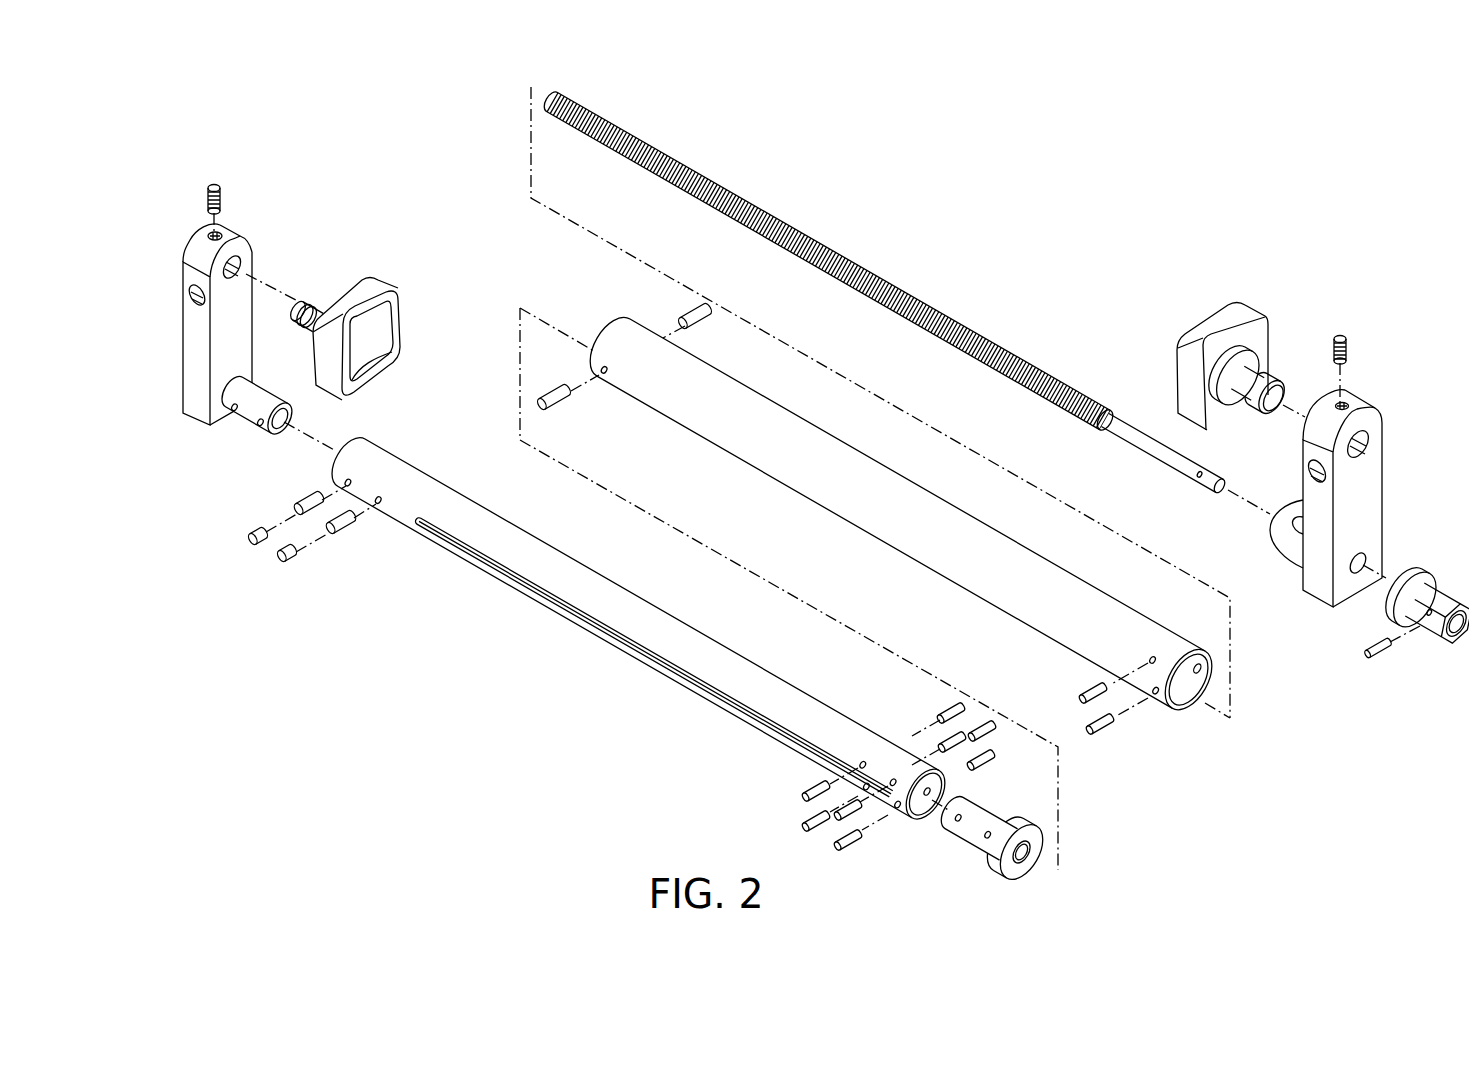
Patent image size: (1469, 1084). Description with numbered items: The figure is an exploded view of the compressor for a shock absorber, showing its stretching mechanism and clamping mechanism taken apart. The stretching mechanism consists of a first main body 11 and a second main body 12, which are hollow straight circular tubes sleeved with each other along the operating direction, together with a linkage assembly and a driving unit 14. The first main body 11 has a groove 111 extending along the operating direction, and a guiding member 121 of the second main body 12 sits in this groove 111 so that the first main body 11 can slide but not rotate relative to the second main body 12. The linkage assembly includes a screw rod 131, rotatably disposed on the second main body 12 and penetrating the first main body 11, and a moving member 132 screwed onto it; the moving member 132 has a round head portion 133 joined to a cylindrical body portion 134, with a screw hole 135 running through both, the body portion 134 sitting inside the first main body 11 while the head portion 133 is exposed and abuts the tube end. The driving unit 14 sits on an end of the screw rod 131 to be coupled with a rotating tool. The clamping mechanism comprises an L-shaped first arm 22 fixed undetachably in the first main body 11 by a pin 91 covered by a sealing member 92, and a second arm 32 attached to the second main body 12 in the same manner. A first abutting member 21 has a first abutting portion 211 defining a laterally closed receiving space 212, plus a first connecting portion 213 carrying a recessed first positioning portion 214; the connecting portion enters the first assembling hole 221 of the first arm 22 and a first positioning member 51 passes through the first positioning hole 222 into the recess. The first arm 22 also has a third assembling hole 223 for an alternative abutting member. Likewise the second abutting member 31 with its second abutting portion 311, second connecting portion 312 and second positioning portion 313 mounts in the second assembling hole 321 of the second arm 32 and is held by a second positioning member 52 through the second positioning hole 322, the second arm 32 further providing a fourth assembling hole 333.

The first main body 11 is at (638, 628).
The groove 111 is at (570, 598).
The second main body 12 is at (828, 508).
The guiding member 121 is at (692, 317).
The screw rod 131 is at (875, 272).
The moving member 132 is at (993, 838).
The head portion 133 is at (1017, 849).
The body portion 134 is at (977, 826).
The screw hole 135 is at (1021, 852).
The driving unit 14 is at (1433, 622).
The first abutting member 21 is at (403, 270).
The first abutting portion 211 is at (405, 320).
The receiving space 212 is at (385, 360).
The first connecting portion 213 is at (297, 303).
The first positioning portion 214 is at (309, 318).
The first arm 22 is at (195, 397).
The first assembling hole 221 is at (228, 275).
The first positioning hole 222 is at (208, 236).
The third assembling hole 223 is at (195, 297).
The second abutting member 31 is at (1168, 308).
The second abutting portion 311 is at (1225, 318).
The second connecting portion 312 is at (1236, 376).
The second positioning portion 313 is at (1250, 372).
The second arm 32 is at (1365, 500).
The second assembling hole 321 is at (1367, 448).
The second positioning hole 322 is at (1346, 406).
The fourth assembling hole 333 is at (1316, 482).
The first positioning member 51 is at (207, 192).
The second positioning member 52 is at (1349, 348).
The pin 91 is at (345, 528).
The sealing member 92 is at (293, 553).